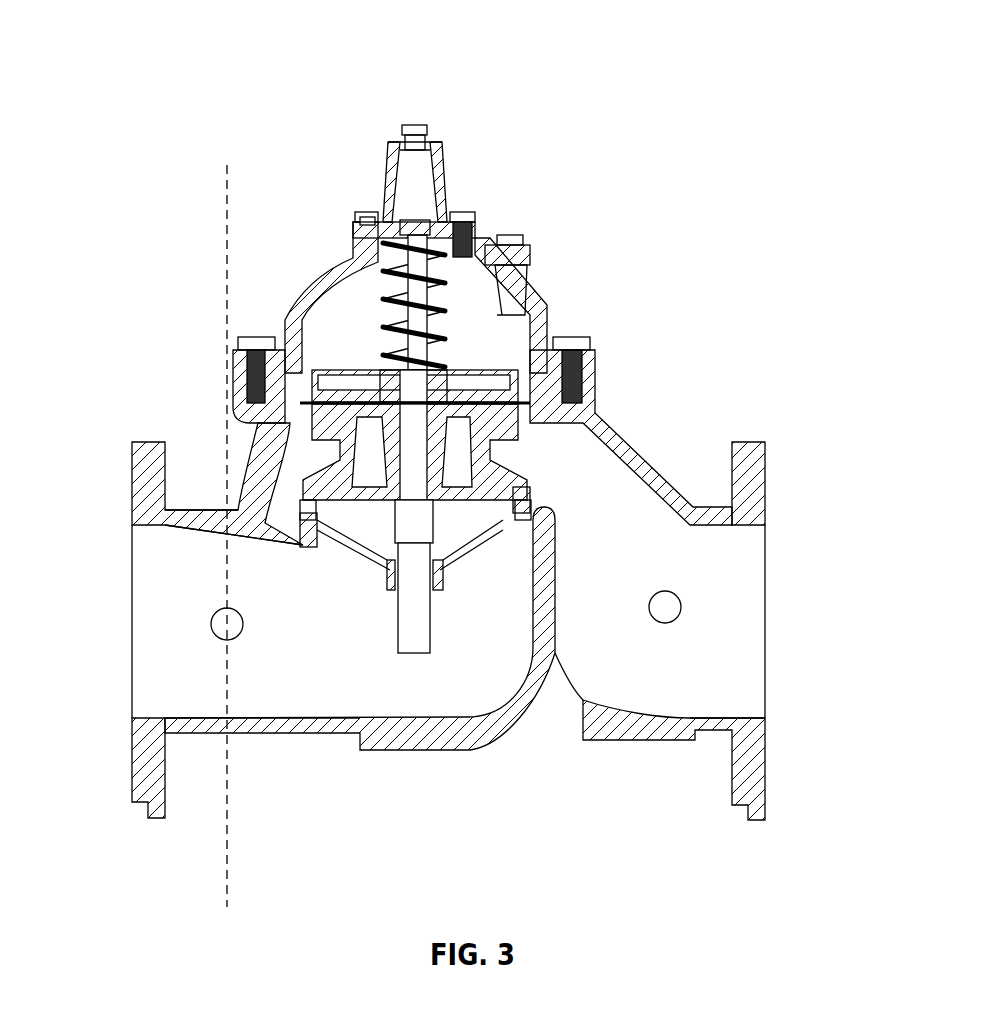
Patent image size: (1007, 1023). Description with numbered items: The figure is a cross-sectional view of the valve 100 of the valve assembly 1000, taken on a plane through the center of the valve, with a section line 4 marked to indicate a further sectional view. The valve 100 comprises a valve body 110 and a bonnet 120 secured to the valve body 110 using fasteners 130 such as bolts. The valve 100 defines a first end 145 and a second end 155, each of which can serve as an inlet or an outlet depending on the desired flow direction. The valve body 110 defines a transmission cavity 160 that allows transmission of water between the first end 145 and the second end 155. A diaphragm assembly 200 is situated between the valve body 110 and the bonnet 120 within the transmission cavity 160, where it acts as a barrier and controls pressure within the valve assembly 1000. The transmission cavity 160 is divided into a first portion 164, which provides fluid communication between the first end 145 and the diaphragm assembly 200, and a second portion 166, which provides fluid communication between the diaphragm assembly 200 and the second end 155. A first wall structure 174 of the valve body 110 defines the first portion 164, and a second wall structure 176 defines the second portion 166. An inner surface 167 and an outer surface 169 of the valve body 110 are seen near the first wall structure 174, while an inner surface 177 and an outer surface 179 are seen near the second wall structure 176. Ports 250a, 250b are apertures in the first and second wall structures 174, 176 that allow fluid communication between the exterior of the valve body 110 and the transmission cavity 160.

The valve assembly 1000 is at (179, 77).
The valve 100 is at (736, 282).
The valve body 110 is at (135, 483).
The bonnet 120 is at (547, 312).
The fasteners 130 is at (250, 339).
The first end 145 is at (765, 543).
The second end 155 is at (130, 575).
The transmission cavity 160 is at (149, 685).
The first portion 164 is at (743, 625).
The second portion 166 is at (208, 705).
The inner surface 167 is at (690, 582).
The outer surface 169 is at (711, 505).
The first wall structure 174 is at (668, 735).
The second wall structure 176 is at (298, 735).
The inner surface 177 is at (212, 585).
The outer surface 179 is at (209, 508).
The diaphragm assembly 200 is at (447, 288).
The port 250a is at (687, 607).
The port 250b is at (207, 625).
The section line 4- 4 is at (227, 165).